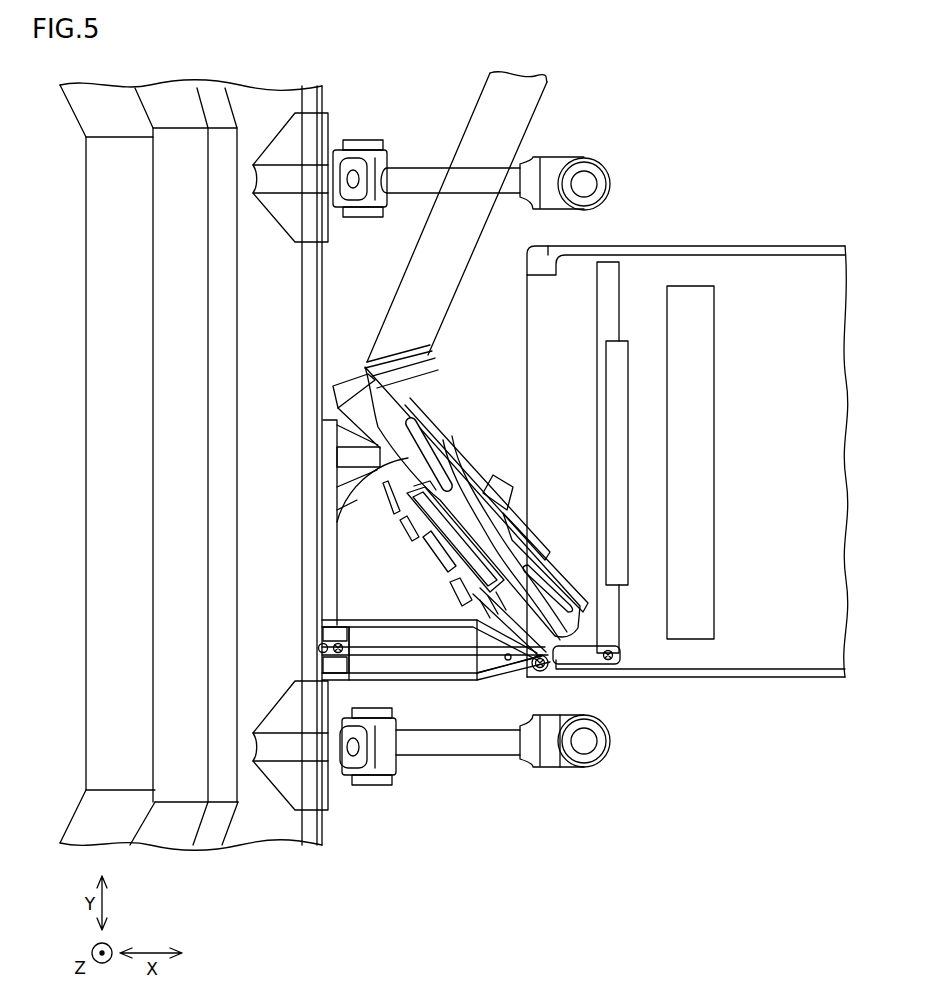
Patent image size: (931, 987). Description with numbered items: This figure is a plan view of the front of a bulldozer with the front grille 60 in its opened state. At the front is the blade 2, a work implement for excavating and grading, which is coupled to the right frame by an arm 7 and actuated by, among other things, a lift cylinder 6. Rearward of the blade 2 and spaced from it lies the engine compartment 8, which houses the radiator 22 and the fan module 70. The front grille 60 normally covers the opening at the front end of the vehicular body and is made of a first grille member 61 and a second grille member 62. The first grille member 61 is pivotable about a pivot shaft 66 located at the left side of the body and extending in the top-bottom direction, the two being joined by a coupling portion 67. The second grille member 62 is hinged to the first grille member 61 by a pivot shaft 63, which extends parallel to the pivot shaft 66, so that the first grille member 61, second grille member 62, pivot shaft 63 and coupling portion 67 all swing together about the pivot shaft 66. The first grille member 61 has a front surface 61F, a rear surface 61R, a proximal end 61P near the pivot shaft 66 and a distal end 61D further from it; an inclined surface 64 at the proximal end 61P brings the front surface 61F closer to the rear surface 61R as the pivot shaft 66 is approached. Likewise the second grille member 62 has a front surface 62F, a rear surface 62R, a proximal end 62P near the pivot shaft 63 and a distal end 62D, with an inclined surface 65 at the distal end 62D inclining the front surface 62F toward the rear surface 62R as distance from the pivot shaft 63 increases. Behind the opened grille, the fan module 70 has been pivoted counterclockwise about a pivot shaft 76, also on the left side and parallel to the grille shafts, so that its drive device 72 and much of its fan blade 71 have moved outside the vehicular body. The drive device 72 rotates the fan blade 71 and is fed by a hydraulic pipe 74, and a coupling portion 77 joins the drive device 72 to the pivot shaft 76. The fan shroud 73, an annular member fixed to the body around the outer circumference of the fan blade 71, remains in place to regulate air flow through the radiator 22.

The blade 2 is at (108, 450).
The lift cylinder 6 is at (425, 185).
The arm 7 is at (490, 125).
The engine compartment 8 is at (785, 285).
The radiator 22 is at (690, 620).
The front grille 60 is at (398, 683).
The first grille member 61 is at (428, 682).
The distal end 61D is at (333, 662).
The front surface 61F is at (458, 682).
The proximal end 61P is at (507, 660).
The rear surface 61R is at (408, 682).
The second grille member 62 is at (393, 637).
The distal end 62D is at (525, 668).
The front surface 62F is at (409, 647).
The proximal end 62P is at (333, 633).
The rear surface 62R is at (365, 647).
The pivot shaft 63 is at (320, 648).
The inclined surface 64 is at (508, 680).
The inclined surface 65 is at (503, 677).
The pivot shaft 66 is at (525, 667).
The coupling portion 67 is at (590, 735).
The fan module 70 is at (462, 442).
The fan blade 71 is at (428, 438).
The drive device 72 is at (476, 505).
The fan shroud 73 is at (618, 376).
The hydraulic pipe 74 is at (507, 482).
The pivot shaft 76 is at (620, 672).
The coupling portion 77 is at (583, 650).